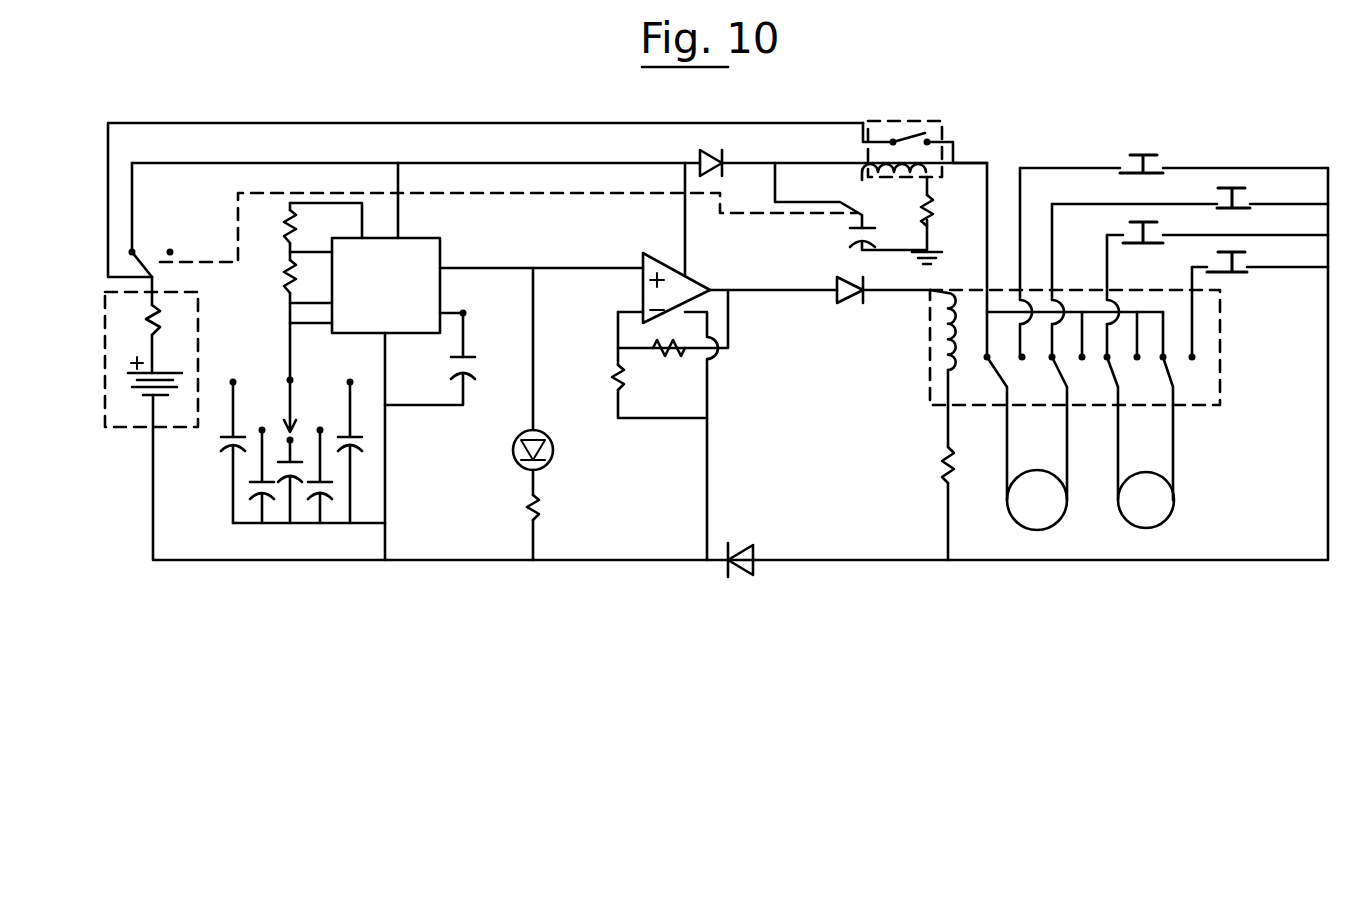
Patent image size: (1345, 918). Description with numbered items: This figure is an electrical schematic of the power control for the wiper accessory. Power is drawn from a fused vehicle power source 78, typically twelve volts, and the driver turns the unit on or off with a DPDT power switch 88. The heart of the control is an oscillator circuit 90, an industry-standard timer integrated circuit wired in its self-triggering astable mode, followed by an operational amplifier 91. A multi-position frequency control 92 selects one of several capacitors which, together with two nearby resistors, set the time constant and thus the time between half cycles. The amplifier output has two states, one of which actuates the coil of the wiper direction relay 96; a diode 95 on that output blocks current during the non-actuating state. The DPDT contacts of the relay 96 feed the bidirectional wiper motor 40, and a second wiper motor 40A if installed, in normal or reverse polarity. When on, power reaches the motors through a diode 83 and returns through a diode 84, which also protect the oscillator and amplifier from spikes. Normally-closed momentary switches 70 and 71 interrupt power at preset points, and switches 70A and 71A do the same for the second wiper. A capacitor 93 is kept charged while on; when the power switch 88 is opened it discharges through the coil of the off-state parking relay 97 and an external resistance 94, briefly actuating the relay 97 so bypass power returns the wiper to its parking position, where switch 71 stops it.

The fused vehicle power source 78 is at (97, 340).
The DPDT power switch 88 is at (148, 252).
The oscillator circuit 90 is at (442, 252).
The operational amplifier 91 is at (662, 252).
The multi-position frequency control 92 is at (288, 405).
The capacitor 93 is at (855, 240).
The external resistance 94 is at (930, 210).
The diode 95 is at (850, 300).
The wiper direction relay 96 is at (930, 338).
The off-state parking relay 97 is at (902, 118).
The diode 83 is at (712, 150).
The diode 84 is at (750, 575).
The normally-closed momentary switch 70 is at (1150, 165).
The normally-closed momentary switch 71 is at (1235, 200).
The momentary switch 71A is at (1150, 235).
The momentary switch 70A is at (1235, 265).
The wiper motor 40 is at (1060, 515).
The motor 40A is at (1170, 515).